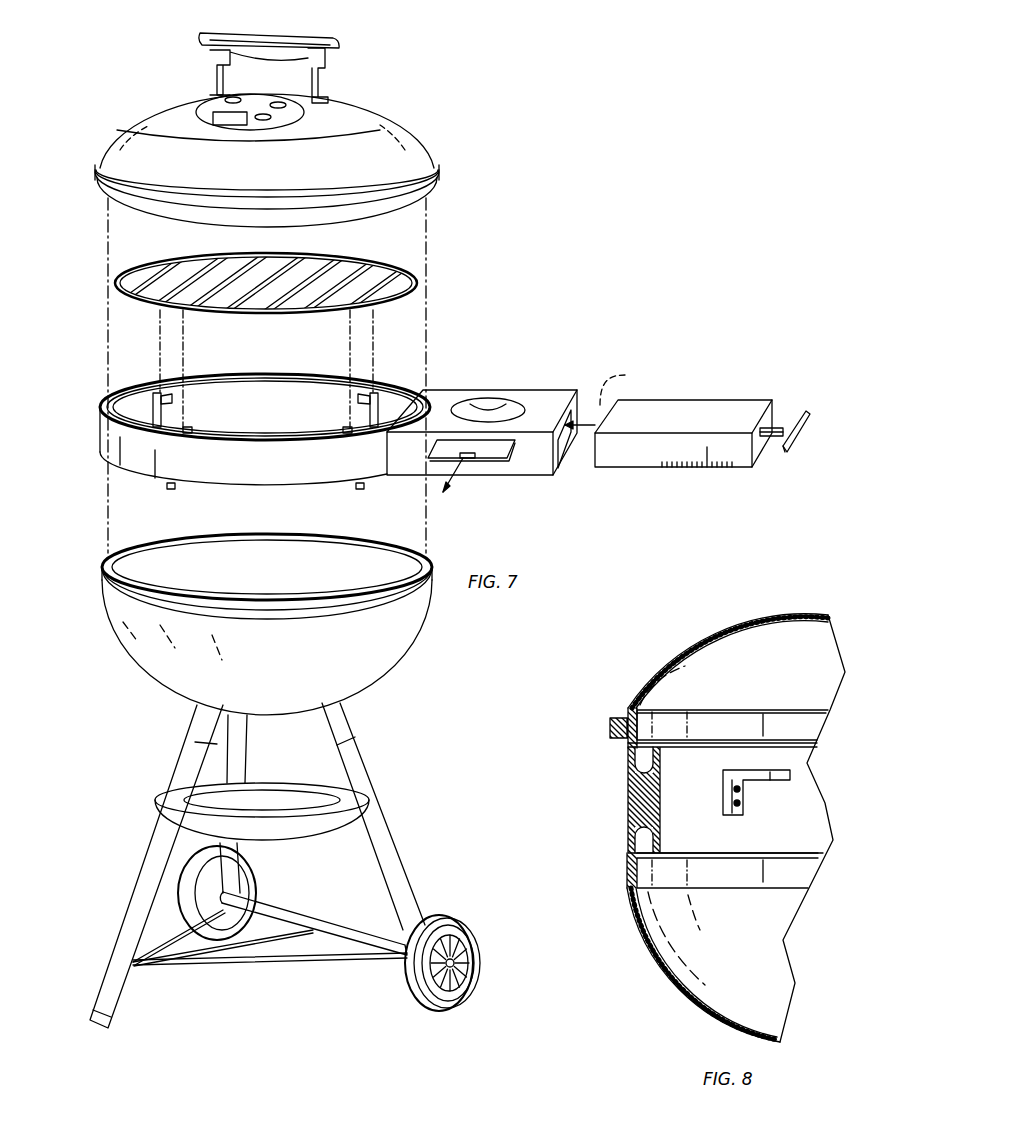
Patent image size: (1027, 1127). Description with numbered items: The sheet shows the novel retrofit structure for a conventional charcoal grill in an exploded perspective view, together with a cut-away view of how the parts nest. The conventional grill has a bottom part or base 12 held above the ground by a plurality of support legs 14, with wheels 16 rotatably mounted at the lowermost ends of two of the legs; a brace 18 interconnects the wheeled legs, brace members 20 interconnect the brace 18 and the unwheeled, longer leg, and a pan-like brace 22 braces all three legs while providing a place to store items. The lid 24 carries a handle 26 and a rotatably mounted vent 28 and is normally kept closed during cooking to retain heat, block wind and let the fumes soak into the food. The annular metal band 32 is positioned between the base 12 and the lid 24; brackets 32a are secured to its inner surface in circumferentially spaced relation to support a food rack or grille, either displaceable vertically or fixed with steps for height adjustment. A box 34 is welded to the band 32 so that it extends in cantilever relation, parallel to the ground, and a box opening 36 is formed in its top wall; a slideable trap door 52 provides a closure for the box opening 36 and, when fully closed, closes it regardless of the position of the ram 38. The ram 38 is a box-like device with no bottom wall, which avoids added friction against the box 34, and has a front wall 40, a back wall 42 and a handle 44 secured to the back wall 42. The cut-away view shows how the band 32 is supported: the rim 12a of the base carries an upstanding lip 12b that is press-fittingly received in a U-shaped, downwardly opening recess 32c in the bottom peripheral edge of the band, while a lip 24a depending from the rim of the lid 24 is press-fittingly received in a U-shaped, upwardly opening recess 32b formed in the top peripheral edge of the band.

In FIG. 7, the base 12 is at (267, 613).
In FIG. 8, the base 12 is at (686, 933).
In FIG. 7, the bowl rim 12a is at (311, 540).
In FIG. 8, the bowl rim groove 12b is at (632, 845).
In FIG. 7, the support legs 14 is at (248, 760).
In FIG. 7, the wheels 16 is at (255, 880).
In FIG. 7, the brace 18 is at (305, 923).
In FIG. 7, the brace members 20 is at (172, 938).
In FIG. 7, the pan-like brace 22 is at (276, 786).
In FIG. 7, the lid 24 is at (294, 160).
In FIG. 8, the lid 24 is at (699, 828).
In FIG. 7, the lid rim 24a is at (408, 200).
In FIG. 8, the lid rim 24a is at (632, 768).
In FIG. 7, the handle 26 is at (297, 42).
In FIG. 7, the vent 28 is at (205, 108).
In FIG. 7, the annular metal band 32 is at (237, 432).
In FIG. 8, the annular metal band 32 is at (693, 798).
In FIG. 7, the brackets 32a is at (165, 395).
In FIG. 8, the brackets 32a is at (755, 783).
In FIG. 7, the ring upper lip 32b is at (130, 388).
In FIG. 8, the ring upper lip 32b is at (655, 768).
In FIG. 7, the ring lower lip 32c is at (203, 487).
In FIG. 8, the ring lower lip 32c is at (657, 815).
In FIG. 7, the box 34 is at (491, 425).
In FIG. 7, the box opening 36 is at (500, 400).
In FIG. 7, the ram 38 is at (676, 410).
In FIG. 7, the front wall 40 is at (625, 386).
In FIG. 7, the back wall 42 is at (772, 410).
In FIG. 7, the handle 44 is at (788, 455).
In FIG. 7, the slideable trap door 52 is at (508, 455).